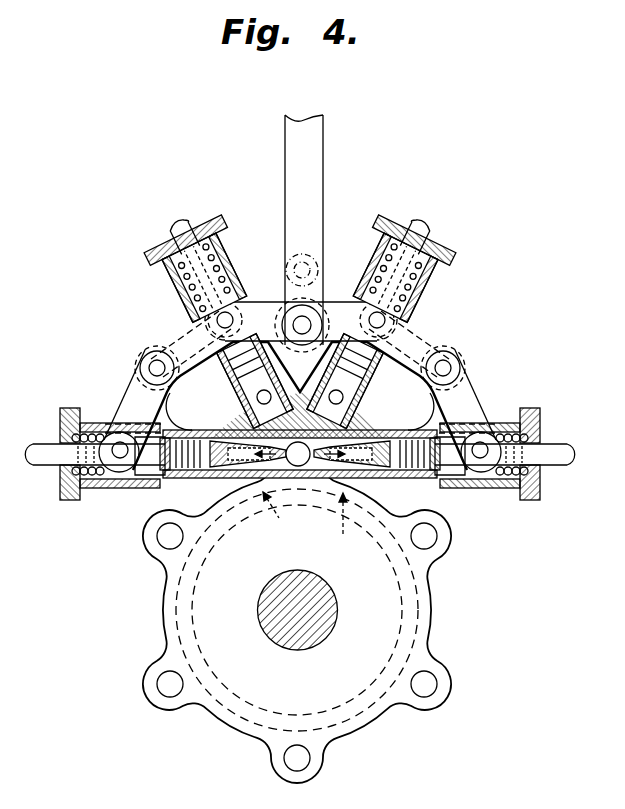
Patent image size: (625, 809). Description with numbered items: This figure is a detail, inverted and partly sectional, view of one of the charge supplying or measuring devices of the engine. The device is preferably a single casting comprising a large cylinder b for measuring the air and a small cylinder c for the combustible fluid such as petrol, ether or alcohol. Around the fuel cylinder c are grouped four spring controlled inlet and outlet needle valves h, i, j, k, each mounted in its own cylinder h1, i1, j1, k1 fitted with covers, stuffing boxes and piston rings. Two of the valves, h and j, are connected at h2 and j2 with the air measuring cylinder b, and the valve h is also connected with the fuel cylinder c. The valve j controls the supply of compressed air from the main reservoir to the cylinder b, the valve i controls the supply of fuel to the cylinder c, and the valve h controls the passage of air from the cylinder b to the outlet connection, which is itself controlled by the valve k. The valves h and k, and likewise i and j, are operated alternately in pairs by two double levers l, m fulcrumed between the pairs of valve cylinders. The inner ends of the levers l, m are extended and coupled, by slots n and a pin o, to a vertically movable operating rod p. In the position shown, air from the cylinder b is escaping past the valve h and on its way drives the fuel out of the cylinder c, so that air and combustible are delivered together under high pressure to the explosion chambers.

The large cylinder b is at (297, 610).
The small cylinder c is at (298, 467).
The operating rod p is at (312, 177).
The pin o is at (315, 312).
The slots n is at (282, 312).
The double lever m is at (176, 343).
The double lever l is at (435, 356).
The needle valve k is at (182, 487).
The cylinder k1 is at (125, 428).
The needle valve h is at (415, 487).
The cylinder h1 is at (490, 428).
The connection h2 is at (344, 528).
The needle valve j is at (252, 431).
The cylinder j1 is at (175, 290).
The connection j2 is at (278, 516).
The needle valve i is at (352, 431).
The cylinder i1 is at (423, 294).